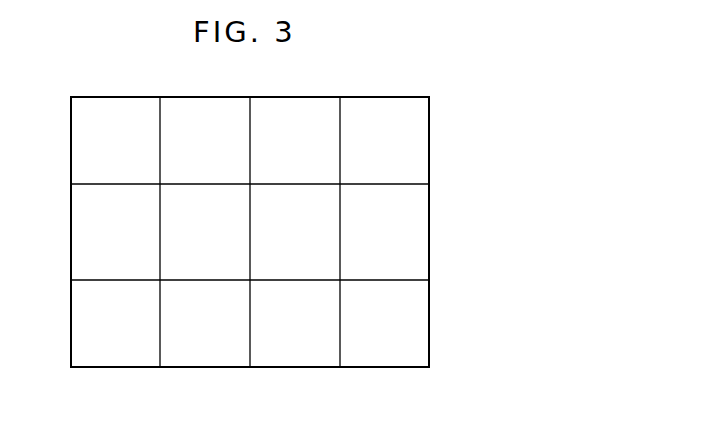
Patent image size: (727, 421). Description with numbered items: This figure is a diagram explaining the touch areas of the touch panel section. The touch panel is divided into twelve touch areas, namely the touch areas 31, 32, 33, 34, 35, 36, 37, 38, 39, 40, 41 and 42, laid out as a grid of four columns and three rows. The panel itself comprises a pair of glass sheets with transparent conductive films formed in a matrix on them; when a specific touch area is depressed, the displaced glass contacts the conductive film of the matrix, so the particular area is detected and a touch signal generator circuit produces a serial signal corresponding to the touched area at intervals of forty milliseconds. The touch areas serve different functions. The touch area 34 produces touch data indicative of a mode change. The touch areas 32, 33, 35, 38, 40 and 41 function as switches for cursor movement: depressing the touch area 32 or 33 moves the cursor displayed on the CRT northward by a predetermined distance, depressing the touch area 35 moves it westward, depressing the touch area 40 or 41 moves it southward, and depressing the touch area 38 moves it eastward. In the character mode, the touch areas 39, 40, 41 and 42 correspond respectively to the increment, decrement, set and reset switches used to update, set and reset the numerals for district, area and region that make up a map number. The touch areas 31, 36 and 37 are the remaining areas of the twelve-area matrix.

The touch area 31 is at (123, 113).
The touch area 32 is at (201, 113).
The touch area 33 is at (293, 113).
The touch area 34 is at (388, 113).
The touch area 35 is at (82, 232).
The touch area 36 is at (167, 255).
The touch area 37 is at (323, 212).
The touch area 38 is at (413, 245).
The touch area 39 is at (115, 358).
The touch area 40 is at (202, 353).
The touch area 41 is at (297, 350).
The touch area 42 is at (387, 355).